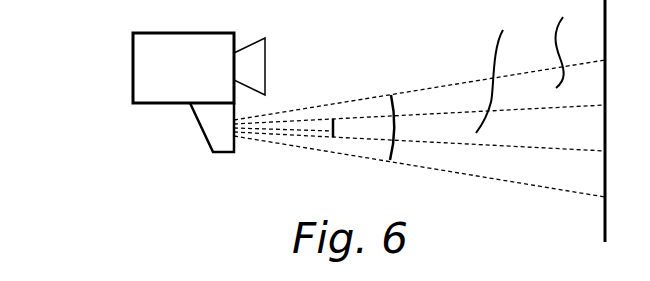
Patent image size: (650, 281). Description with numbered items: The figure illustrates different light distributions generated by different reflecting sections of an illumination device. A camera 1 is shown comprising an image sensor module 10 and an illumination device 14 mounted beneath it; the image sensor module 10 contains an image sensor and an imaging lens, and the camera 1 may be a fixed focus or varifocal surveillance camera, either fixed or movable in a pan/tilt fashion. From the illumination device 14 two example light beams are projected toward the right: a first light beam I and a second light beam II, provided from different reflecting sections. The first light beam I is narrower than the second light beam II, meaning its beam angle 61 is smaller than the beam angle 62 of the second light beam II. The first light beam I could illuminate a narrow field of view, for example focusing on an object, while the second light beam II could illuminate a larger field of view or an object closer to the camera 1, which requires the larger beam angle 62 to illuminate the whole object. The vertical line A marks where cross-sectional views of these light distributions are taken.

The camera 1 is at (156, 136).
The image sensor module 10 is at (155, 62).
The illumination device 14 is at (218, 137).
The beam angle 61 is at (336, 128).
The beam angle 62 is at (395, 128).
The first light beam I is at (497, 75).
The second light beam II is at (566, 44).
The cross-section line A is at (601, 139).